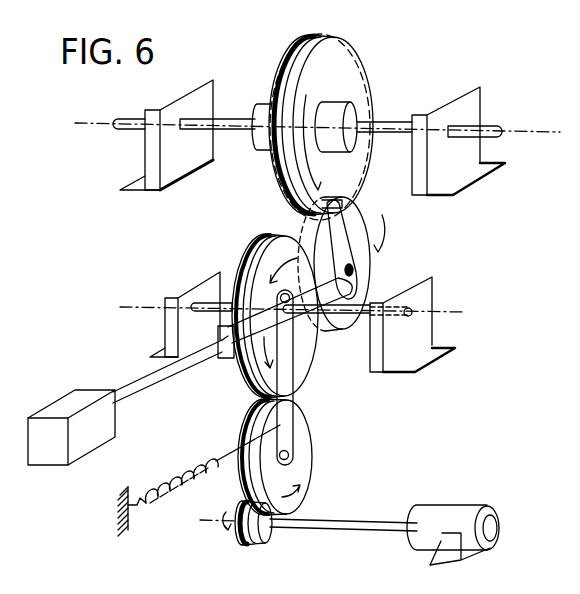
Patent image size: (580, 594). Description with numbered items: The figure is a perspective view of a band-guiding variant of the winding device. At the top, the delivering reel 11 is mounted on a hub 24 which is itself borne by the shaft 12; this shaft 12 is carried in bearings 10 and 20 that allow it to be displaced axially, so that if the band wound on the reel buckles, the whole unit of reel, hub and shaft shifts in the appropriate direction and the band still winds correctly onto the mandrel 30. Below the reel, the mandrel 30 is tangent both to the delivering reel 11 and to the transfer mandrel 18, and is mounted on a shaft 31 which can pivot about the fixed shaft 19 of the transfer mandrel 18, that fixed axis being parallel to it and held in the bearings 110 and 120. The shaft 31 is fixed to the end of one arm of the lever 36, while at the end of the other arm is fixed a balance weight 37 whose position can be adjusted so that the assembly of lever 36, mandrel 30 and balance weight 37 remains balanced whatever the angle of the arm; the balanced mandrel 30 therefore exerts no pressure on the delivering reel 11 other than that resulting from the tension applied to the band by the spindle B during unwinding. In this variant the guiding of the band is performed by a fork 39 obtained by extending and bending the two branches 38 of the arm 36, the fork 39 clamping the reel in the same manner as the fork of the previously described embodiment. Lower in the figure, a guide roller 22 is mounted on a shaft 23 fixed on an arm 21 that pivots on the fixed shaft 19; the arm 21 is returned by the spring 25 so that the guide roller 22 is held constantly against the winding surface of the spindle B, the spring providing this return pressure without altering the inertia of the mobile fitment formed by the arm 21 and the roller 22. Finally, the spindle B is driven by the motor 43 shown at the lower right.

The bearing 10 is at (148, 148).
The delivering reel 11 is at (340, 62).
The shaft 12 is at (497, 127).
The transfer mandrel 18 is at (236, 262).
The fixed shaft 19 is at (212, 300).
The bearing 20 is at (418, 185).
The arm 21 is at (285, 362).
The guide roller 22 is at (312, 430).
The shaft 23 is at (290, 455).
The hub 24 is at (358, 80).
The spring 25 is at (172, 470).
The mandrel 30 is at (352, 316).
The shaft 31 is at (366, 244).
The lever 36 is at (222, 352).
The balance weight 37 is at (56, 410).
The branches 38 is at (236, 358).
The fork 39 is at (355, 205).
The motor 43 is at (452, 520).
The bearing 110 is at (165, 330).
The bearing 120 is at (412, 333).
The spindle B is at (270, 537).